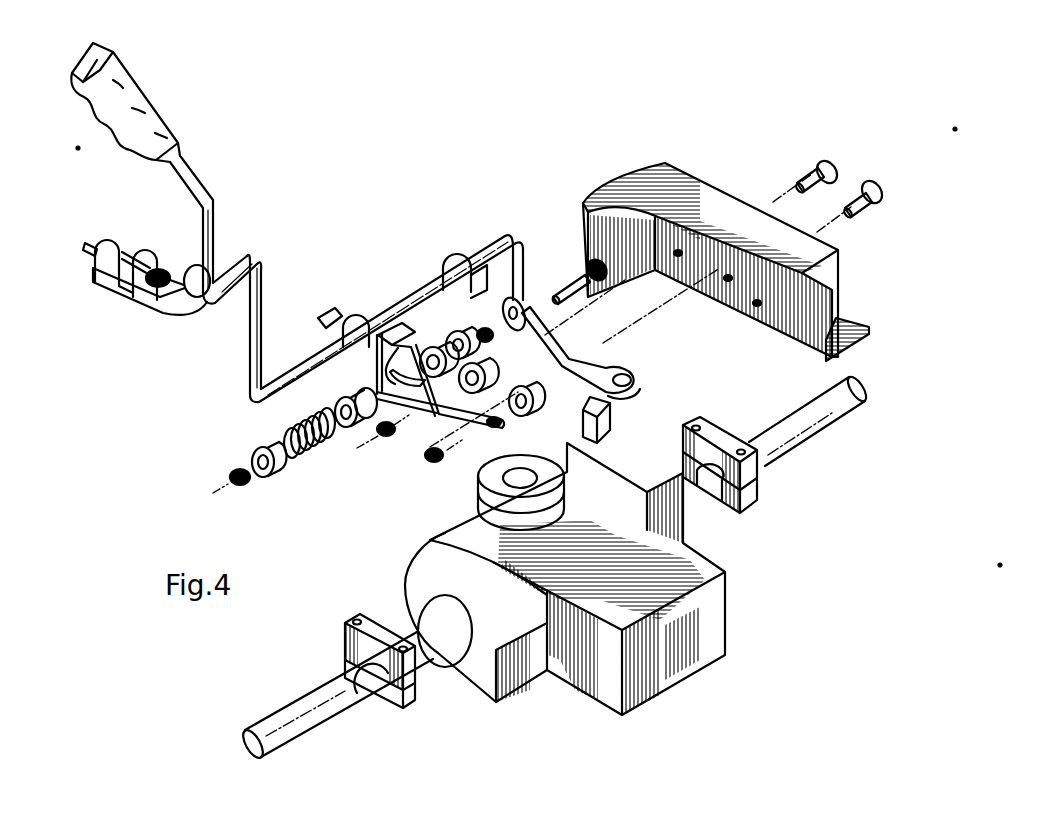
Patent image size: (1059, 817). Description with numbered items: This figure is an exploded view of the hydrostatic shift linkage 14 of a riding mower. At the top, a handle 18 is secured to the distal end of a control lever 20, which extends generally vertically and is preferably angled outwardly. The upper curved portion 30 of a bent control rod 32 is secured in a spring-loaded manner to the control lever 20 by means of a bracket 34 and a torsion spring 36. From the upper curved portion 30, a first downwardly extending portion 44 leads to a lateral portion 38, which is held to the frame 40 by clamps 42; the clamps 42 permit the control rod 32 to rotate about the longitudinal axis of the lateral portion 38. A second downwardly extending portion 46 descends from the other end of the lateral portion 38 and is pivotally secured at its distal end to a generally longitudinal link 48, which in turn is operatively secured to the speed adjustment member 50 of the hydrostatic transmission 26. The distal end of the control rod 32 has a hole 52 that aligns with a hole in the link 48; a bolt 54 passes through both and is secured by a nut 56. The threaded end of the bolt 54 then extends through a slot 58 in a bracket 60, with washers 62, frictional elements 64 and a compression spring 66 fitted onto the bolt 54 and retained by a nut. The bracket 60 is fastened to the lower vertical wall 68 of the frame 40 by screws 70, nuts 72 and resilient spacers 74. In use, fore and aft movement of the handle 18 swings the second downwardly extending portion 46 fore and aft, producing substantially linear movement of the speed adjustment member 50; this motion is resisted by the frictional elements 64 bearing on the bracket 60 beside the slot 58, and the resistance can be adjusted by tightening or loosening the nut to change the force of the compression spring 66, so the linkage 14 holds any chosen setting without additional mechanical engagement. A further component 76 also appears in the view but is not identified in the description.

The hydrostatic shift linkage 14 is at (341, 197).
The handle 18 is at (140, 88).
The control lever 20 is at (195, 176).
The hydrostatic transmission 26 is at (565, 579).
The upper curved portion 30 is at (232, 267).
The control rod 32 is at (258, 256).
The bracket 34 is at (112, 238).
The torsion spring 36 is at (187, 268).
The lateral portion 38 is at (405, 302).
The frame 40 is at (726, 262).
The clamps 42 is at (352, 322).
The first downwardly extending portion 44 is at (247, 352).
The second downwardly extending portion 46 is at (520, 280).
The link 48 is at (560, 350).
The speed adjustment member 50 is at (612, 398).
The hole 52 is at (528, 313).
The bolt 54 is at (604, 287).
The nut 56 is at (490, 340).
The slot 58 is at (390, 378).
The bracket 60 is at (438, 425).
The washers 62 is at (460, 336).
The frictional elements 64 is at (433, 347).
The compression spring 66 is at (305, 450).
The lower vertical wall 68 is at (240, 490).
The screws 70 is at (758, 325).
The nuts 72 is at (878, 190).
The resilient spacers 74 is at (383, 445).
The roller 76 is at (522, 393).